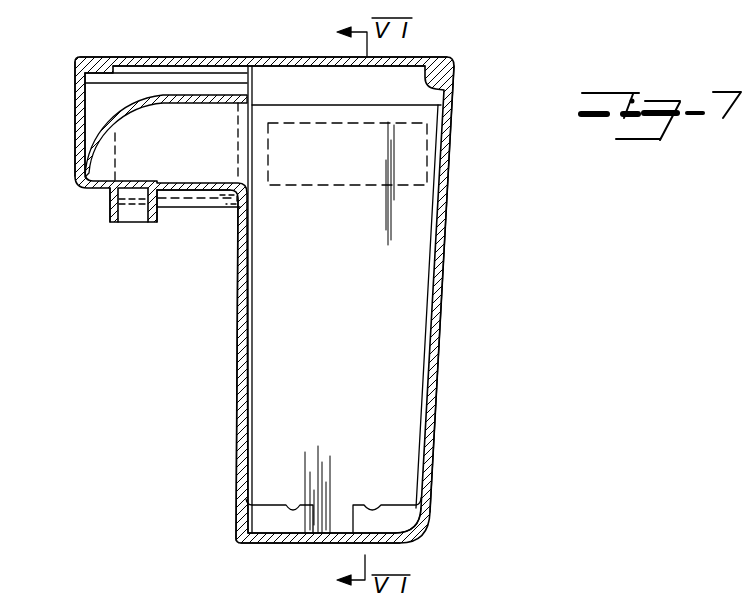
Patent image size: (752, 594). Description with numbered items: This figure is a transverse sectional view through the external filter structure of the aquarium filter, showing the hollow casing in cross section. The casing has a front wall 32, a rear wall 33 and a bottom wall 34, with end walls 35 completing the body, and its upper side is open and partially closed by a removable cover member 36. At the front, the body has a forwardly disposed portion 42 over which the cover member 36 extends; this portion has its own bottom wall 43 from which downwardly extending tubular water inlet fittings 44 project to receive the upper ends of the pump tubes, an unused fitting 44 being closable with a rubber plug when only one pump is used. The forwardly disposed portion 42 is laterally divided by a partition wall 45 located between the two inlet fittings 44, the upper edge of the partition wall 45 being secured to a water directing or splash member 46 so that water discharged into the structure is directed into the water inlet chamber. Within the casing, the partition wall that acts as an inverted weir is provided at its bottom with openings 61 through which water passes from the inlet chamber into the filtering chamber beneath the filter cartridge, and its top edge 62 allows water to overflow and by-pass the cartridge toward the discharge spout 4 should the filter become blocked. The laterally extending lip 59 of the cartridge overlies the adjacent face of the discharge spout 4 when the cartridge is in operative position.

The discharge spout 4 is at (172, 209).
The front wall 32 is at (236, 355).
The rear wall 33 is at (443, 290).
The bottom wall 34 is at (286, 537).
The end walls 35 is at (393, 518).
The removable cover member 36 is at (250, 57).
The forwardly disposed portion 42 is at (79, 97).
The bottom wall 43 is at (196, 191).
The tubular water inlet fittings 44 is at (110, 196).
The partition wall 45 is at (118, 131).
The water directing or splash member 46 is at (166, 104).
The laterally extending lip 59 is at (229, 210).
The openings 61 is at (369, 510).
The top edge 62 is at (318, 105).